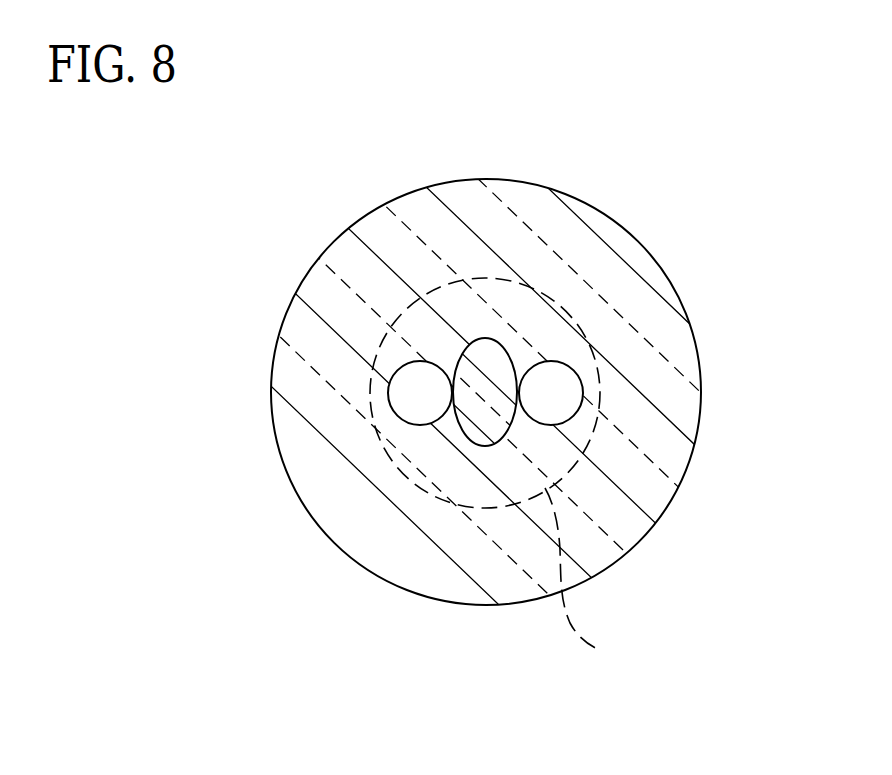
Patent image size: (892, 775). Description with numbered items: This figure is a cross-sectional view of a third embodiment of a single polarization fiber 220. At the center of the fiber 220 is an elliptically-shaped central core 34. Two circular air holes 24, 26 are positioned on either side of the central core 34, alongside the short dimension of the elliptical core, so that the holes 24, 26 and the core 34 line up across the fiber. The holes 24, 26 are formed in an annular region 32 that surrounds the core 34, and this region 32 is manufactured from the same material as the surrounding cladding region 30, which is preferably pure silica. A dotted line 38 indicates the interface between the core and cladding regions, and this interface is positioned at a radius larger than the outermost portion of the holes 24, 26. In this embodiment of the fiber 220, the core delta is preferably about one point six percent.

The single polarization fiber 220 is at (660, 201).
The cladding region 30 is at (675, 463).
The annular region 32 is at (460, 480).
The circular air hole 24 is at (403, 393).
The circular air hole 26 is at (568, 380).
The elliptically-shaped central core 34 is at (488, 338).
The dotted line 38 is at (587, 580).